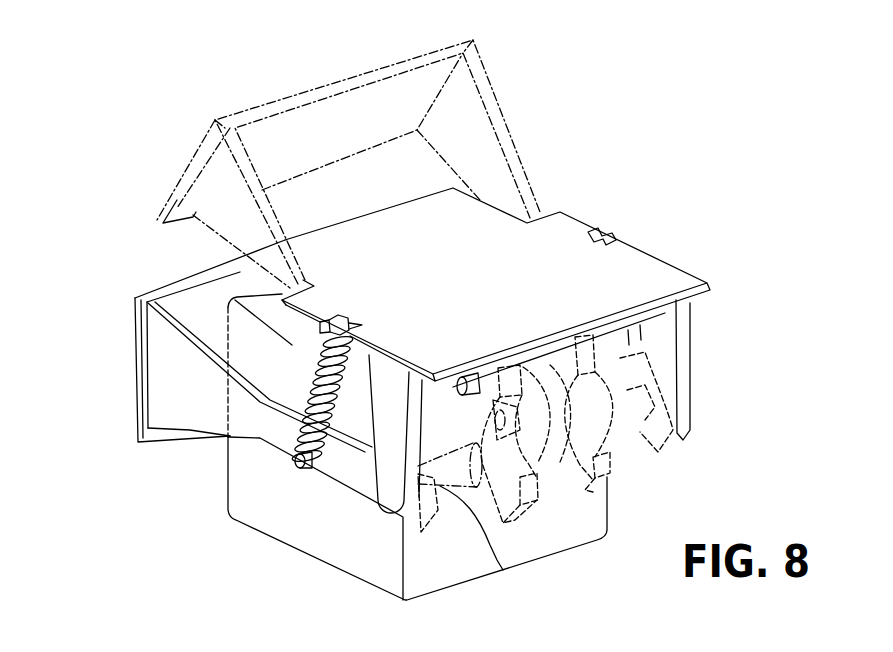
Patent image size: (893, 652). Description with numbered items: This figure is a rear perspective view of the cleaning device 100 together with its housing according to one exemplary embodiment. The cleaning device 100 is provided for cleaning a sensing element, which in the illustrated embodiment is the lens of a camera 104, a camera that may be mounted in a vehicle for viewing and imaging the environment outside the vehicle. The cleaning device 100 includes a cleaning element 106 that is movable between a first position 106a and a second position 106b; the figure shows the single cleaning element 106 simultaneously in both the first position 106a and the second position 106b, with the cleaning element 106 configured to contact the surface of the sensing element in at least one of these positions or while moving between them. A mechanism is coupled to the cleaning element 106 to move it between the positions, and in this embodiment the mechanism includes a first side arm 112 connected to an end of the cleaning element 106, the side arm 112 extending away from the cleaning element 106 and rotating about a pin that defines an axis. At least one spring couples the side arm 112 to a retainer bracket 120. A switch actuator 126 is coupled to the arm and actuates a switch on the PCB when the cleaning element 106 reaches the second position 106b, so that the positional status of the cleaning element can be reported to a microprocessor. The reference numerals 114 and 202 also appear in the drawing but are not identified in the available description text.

The cleaning device 100 is at (645, 162).
The camera 104 is at (323, 547).
The cleaning element 106 is at (278, 103).
The first position 106a is at (171, 128).
The second position 106b is at (113, 393).
The first side arm 112 is at (196, 212).
The flap panel 114 is at (477, 130).
The retainer bracket 120 is at (657, 273).
The switch actuator 126 is at (643, 372).
The shaft 202 is at (450, 487).